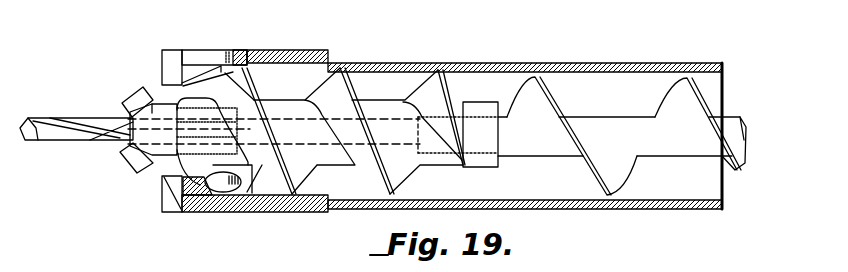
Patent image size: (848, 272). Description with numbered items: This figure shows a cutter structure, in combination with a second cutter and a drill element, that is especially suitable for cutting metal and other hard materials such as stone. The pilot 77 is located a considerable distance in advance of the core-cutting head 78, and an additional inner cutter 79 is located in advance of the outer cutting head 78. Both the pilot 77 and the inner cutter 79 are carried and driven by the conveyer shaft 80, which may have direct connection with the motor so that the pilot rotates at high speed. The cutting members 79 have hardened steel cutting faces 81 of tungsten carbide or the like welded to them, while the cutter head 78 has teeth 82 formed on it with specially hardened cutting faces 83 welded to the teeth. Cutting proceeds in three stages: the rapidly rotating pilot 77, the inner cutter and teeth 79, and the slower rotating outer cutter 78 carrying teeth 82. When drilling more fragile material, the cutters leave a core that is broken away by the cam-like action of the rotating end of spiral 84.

The pilot 77 is at (43, 123).
The core-cutting head 78 is at (273, 49).
The inner cutter 79 is at (134, 97).
The conveyer shaft 80 is at (602, 123).
The cutting faces 81 is at (138, 162).
The teeth 82 is at (205, 53).
The cutting faces 83 is at (170, 53).
The spiral 84 is at (200, 182).